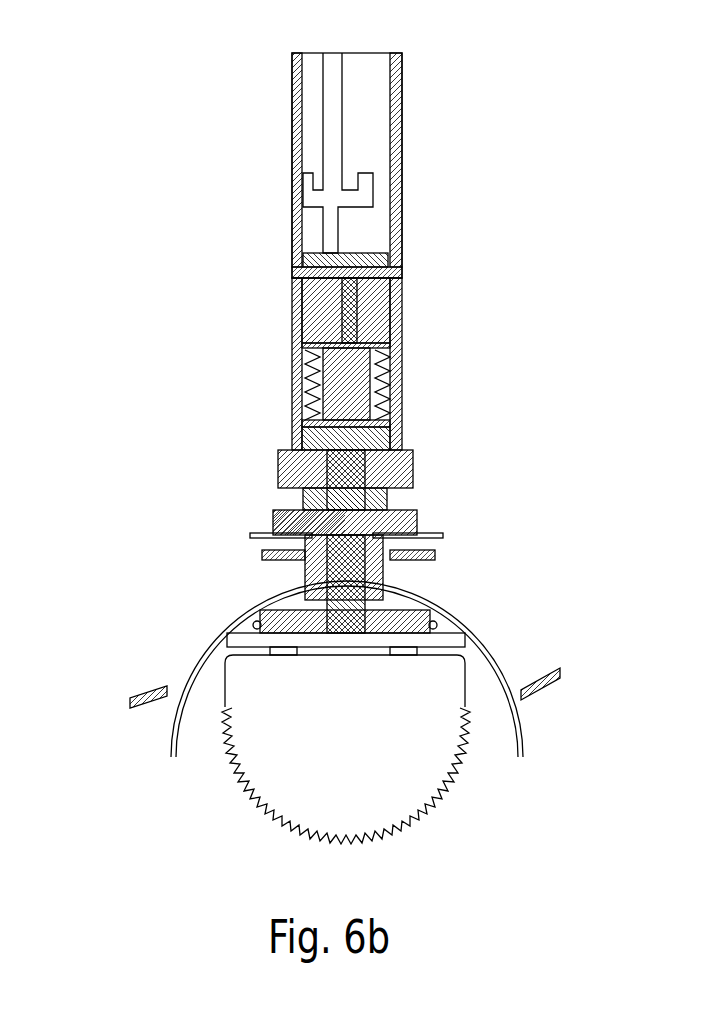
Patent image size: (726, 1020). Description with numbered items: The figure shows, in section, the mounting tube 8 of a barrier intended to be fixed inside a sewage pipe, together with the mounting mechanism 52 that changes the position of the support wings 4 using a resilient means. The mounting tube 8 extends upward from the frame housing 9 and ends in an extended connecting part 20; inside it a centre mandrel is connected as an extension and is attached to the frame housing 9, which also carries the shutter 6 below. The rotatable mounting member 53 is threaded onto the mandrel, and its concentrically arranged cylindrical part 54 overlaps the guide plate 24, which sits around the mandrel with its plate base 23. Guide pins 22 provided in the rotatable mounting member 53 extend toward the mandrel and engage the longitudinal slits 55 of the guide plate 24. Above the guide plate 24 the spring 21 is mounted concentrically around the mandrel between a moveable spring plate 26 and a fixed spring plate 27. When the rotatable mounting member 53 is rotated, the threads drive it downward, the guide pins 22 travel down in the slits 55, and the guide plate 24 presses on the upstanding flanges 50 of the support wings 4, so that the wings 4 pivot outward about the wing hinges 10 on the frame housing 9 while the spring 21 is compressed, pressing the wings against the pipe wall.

The mounting tube 8 is at (170, 247).
The extended connecting part 20 is at (322, 250).
The rotatable mounting member 53 is at (287, 268).
The moveable spring plate 26 is at (308, 342).
The spring 21 is at (373, 390).
The fixed spring plate 27 is at (308, 427).
The cylindrical part 54 is at (393, 410).
The longitudinal slits 55 is at (317, 453).
The guide pins 22 is at (413, 460).
The plate base 23 is at (415, 522).
The guide plate 24 is at (265, 520).
The upstanding flange 50 is at (383, 565).
The support wing 4 is at (210, 618).
The wing hinge 10 is at (253, 622).
The frame housing 9 is at (392, 600).
The shutter 6 is at (268, 748).
The mounting mechanism 52 is at (580, 43).